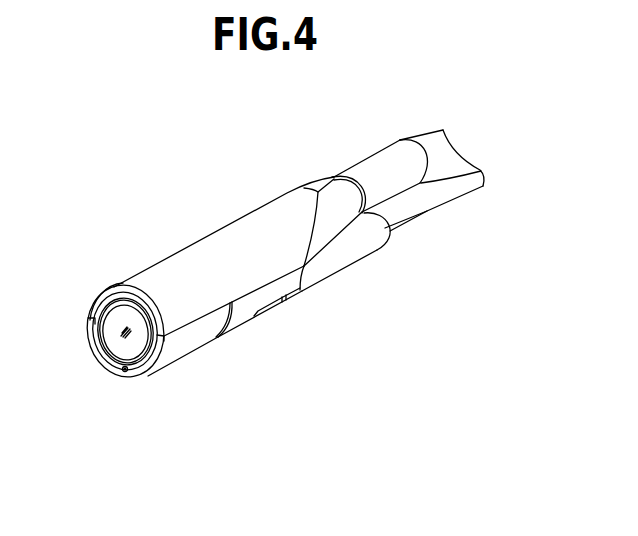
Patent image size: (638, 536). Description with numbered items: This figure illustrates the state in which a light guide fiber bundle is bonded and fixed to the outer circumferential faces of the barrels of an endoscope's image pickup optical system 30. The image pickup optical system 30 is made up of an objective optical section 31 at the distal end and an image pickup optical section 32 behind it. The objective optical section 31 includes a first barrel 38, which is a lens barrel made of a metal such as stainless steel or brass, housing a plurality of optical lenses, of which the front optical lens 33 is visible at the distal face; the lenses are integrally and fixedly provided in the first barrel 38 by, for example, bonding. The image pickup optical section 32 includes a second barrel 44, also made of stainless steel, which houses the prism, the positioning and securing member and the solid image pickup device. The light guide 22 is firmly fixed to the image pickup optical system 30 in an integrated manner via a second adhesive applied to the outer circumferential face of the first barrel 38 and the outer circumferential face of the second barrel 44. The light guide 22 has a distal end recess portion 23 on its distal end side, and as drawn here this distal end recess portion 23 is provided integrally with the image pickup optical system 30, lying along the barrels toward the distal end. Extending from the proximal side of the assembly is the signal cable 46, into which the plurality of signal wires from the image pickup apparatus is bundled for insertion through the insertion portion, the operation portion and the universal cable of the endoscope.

The light guide 22 is at (392, 181).
The distal end recess portion 23 is at (193, 263).
The image pickup optical system 30 is at (191, 397).
The objective optical section 31 is at (156, 379).
The image pickup optical section 32 is at (260, 383).
The optical lens 33 is at (110, 337).
The first barrel 38 is at (184, 343).
The second barrel 44 is at (247, 313).
The signal cable 46 is at (457, 195).